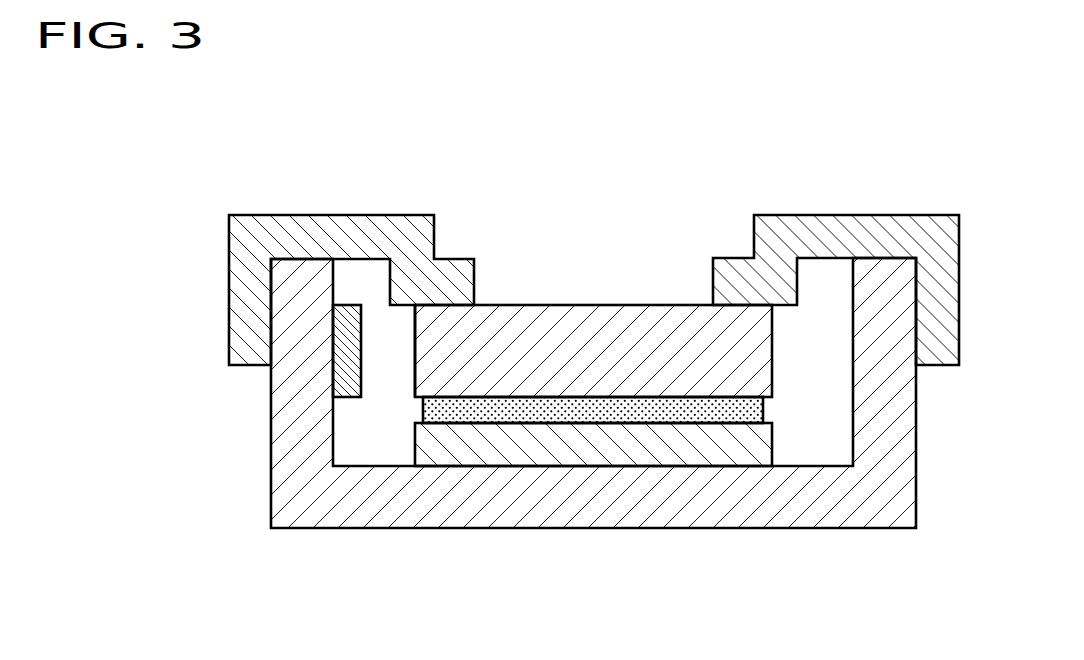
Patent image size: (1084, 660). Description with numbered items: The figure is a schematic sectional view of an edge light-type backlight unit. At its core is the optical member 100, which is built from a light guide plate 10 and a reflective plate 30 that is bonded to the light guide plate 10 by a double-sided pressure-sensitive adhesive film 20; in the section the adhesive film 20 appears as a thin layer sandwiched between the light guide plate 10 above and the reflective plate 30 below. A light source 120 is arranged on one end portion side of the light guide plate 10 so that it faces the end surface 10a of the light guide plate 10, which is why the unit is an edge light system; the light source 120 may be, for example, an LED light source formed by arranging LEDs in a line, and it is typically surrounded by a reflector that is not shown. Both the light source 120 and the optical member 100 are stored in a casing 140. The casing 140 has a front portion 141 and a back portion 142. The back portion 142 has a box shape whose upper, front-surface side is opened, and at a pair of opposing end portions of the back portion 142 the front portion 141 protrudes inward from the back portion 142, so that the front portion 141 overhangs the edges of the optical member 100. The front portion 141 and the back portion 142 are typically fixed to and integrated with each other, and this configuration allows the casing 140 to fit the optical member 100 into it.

The optical member 100 is at (622, 340).
The light guide plate 10 is at (573, 367).
The end surface 10a is at (415, 355).
The double-sided pressure-sensitive adhesive film 20 is at (755, 411).
The reflective plate 30 is at (760, 447).
The light source 120 is at (348, 383).
The casing 140 is at (509, 371).
The front portion 141 is at (240, 245).
The back portion 142 is at (277, 443).